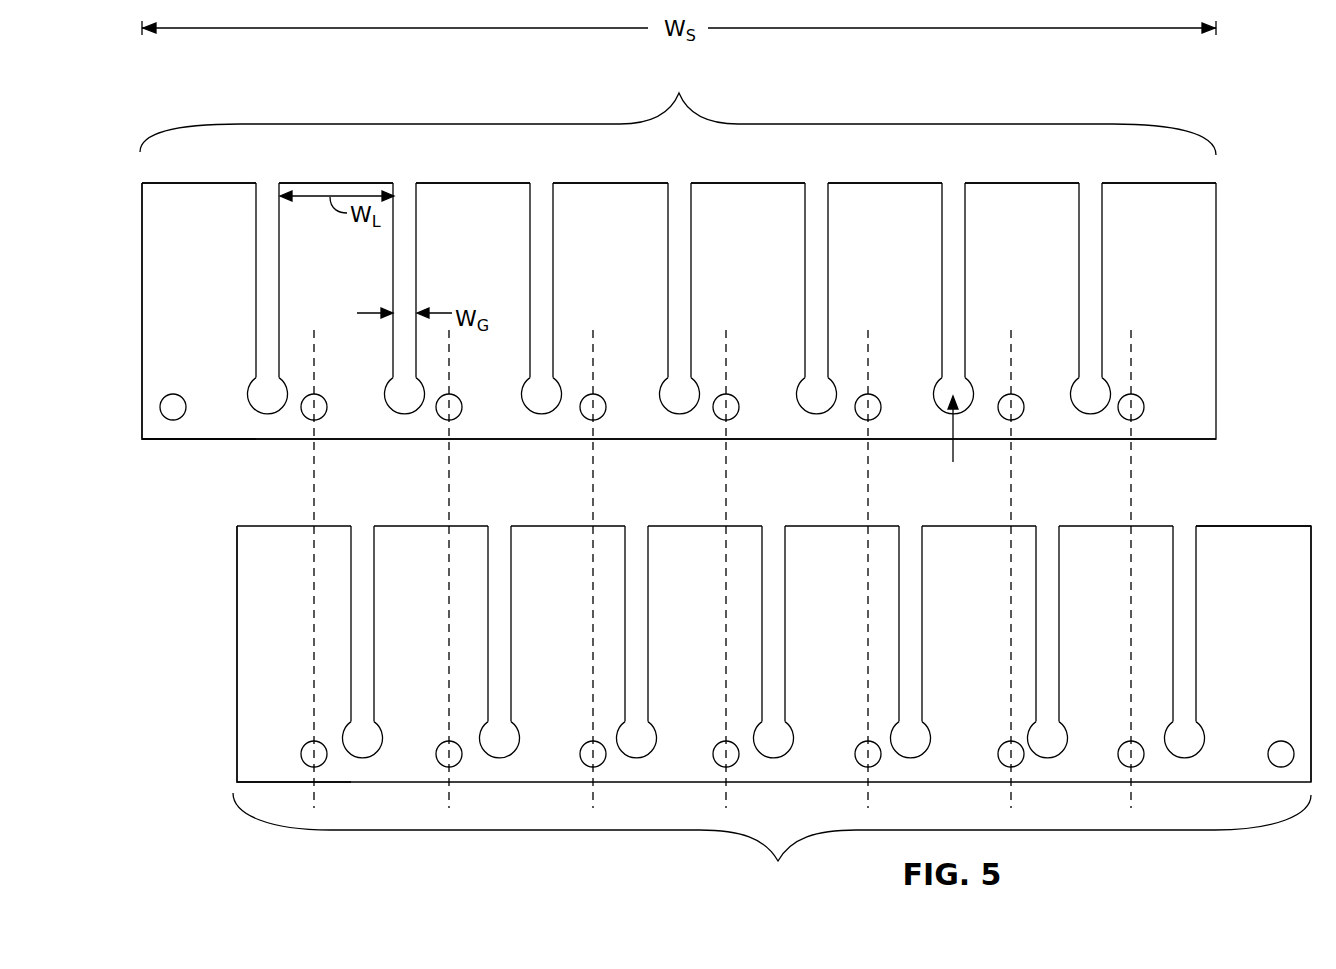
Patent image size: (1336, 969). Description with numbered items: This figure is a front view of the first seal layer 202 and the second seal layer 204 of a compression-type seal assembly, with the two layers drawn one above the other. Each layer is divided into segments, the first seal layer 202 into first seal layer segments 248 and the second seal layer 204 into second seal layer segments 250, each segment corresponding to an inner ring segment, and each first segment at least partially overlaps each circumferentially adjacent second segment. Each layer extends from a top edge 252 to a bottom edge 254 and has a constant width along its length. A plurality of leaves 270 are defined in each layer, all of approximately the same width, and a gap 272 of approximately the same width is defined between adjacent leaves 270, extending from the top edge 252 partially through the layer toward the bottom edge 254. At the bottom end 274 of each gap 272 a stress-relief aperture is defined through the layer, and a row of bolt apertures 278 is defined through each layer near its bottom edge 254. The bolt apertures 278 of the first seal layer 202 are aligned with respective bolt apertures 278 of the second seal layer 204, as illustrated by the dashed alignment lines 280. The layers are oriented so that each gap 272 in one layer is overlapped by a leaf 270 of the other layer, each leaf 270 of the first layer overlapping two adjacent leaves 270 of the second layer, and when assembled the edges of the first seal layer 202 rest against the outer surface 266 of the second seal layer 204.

The first seal layer 202 is at (1245, 323).
The second seal layer 204 is at (178, 687).
The first seal layer segment 248 is at (678, 108).
The second seal layer segment 250 is at (772, 844).
The top edge 252 is at (612, 183).
The bottom edge 254 is at (608, 440).
The outer surface of second seal layer 266 is at (1272, 665).
The leaf 270 is at (152, 298).
The gap 272 is at (268, 192).
The bottom end of gap 274 is at (262, 378).
The bolt aperture 278 is at (462, 408).
The alignment line 280 is at (455, 512).